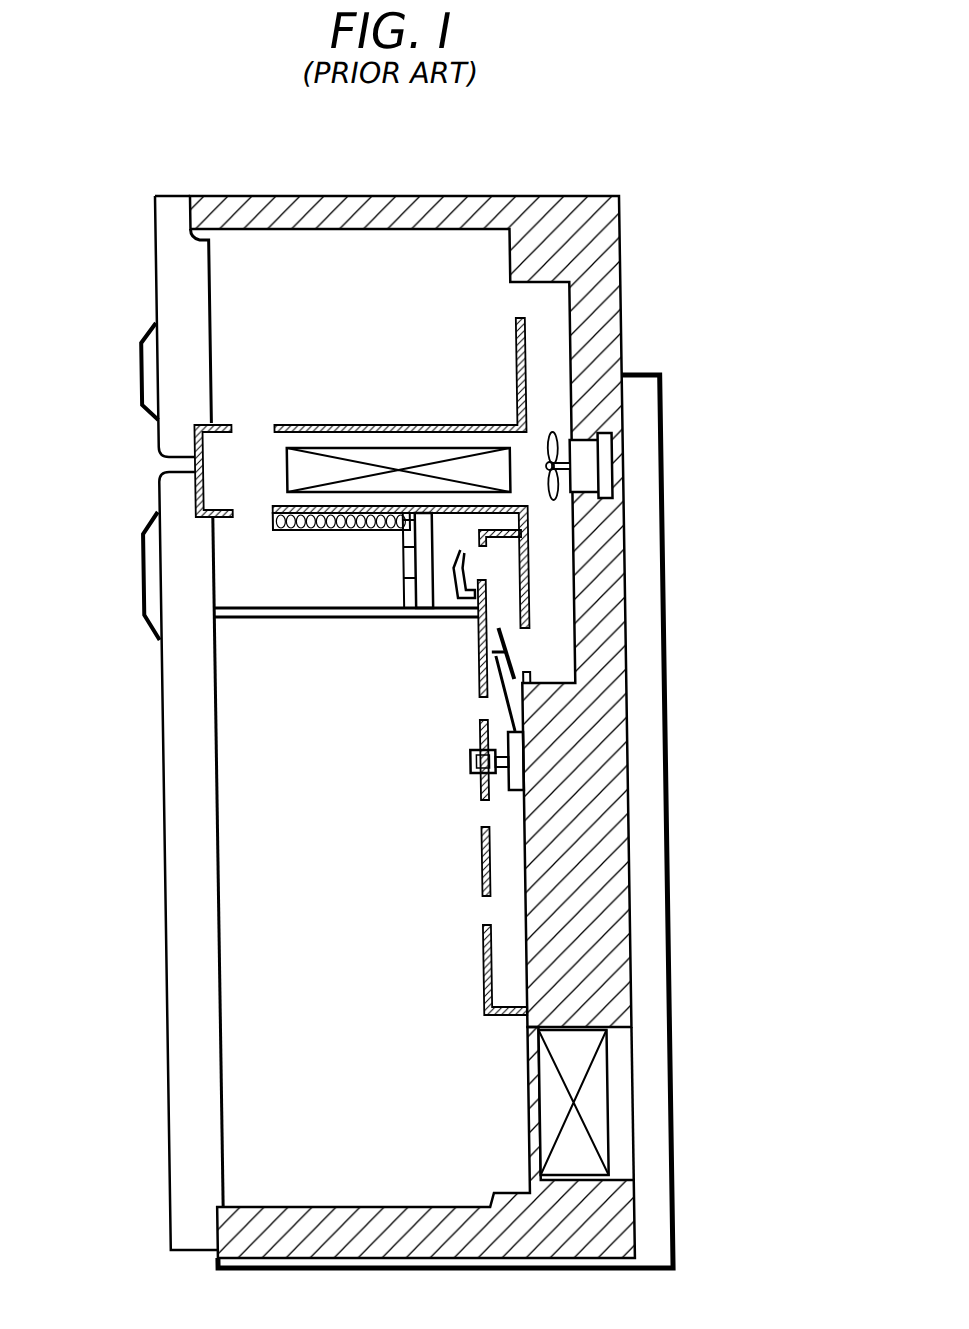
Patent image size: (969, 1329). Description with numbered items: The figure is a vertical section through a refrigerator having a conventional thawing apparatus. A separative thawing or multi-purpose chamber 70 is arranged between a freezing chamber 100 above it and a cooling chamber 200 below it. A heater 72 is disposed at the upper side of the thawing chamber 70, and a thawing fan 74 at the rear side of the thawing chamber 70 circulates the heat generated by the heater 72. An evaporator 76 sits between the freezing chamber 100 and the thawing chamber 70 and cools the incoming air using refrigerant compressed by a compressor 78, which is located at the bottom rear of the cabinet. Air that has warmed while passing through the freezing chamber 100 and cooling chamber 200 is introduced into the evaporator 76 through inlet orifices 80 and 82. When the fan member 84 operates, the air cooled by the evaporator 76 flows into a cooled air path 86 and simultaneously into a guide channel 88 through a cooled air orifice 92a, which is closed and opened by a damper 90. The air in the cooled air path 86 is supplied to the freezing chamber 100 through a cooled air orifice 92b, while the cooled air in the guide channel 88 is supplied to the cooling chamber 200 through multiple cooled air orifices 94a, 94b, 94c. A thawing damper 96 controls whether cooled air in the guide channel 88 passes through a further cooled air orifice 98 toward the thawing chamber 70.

The freezing chamber 100 is at (255, 258).
The cooled air path 86 is at (559, 327).
The guide channel 88 is at (508, 965).
The cooled air orifice 92b is at (528, 305).
The inlet orifice 80 is at (262, 424).
The inlet orifice 82 is at (257, 514).
The evaporator 76 is at (291, 468).
The thawing fan 74 is at (422, 559).
The heater 72 is at (298, 528).
The thawing chamber 70 is at (245, 590).
The thawing damper 96 is at (488, 597).
The cooled air orifice 98 is at (486, 560).
The cooled air orifice 92a is at (537, 647).
The damper 90 is at (509, 660).
The cooled air orifice 94a is at (481, 704).
The cooled air orifice 94b is at (480, 812).
The cooled air orifice 94c is at (480, 909).
The compressor 78 is at (604, 1108).
The cooling chamber 200 is at (257, 1064).
The fan member 84 is at (608, 466).